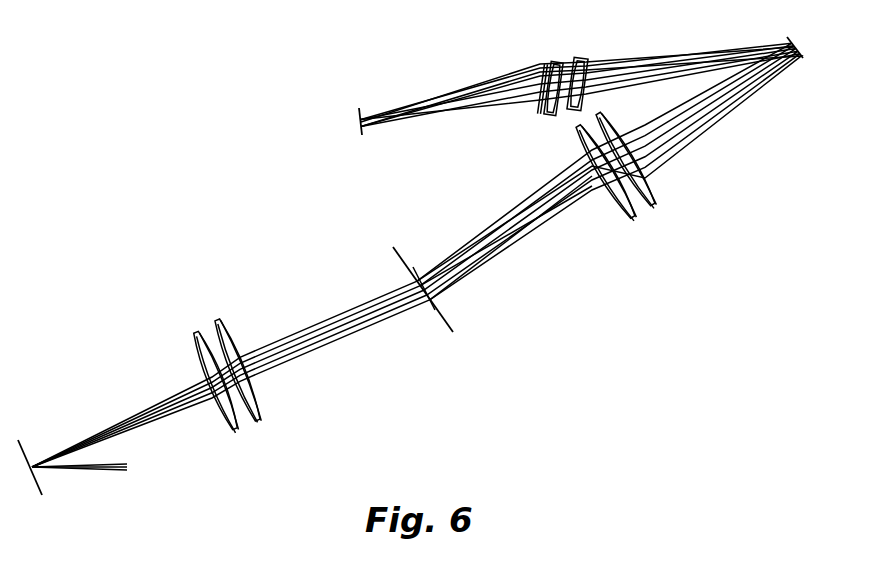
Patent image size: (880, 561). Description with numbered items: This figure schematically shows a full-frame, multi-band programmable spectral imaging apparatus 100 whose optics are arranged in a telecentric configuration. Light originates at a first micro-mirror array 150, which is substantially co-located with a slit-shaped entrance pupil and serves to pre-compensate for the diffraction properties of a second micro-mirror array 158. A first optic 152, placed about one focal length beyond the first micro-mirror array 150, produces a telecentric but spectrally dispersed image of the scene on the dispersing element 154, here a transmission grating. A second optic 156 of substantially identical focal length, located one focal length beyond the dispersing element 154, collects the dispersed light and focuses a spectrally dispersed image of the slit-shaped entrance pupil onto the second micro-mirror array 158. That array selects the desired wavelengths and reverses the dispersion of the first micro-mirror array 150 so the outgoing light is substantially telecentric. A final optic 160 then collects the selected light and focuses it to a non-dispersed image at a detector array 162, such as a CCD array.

The full-frame, multi-band programmable spectral imaging apparatus 100 is at (68, 163).
The first micro-mirror array 150 is at (18, 440).
The first optic 152 is at (270, 408).
The dispersing element 154 is at (452, 323).
The second optic 156 is at (665, 195).
The second micro-mirror array 158 is at (803, 40).
The final optic 160 is at (540, 112).
The detector array 162 is at (357, 101).